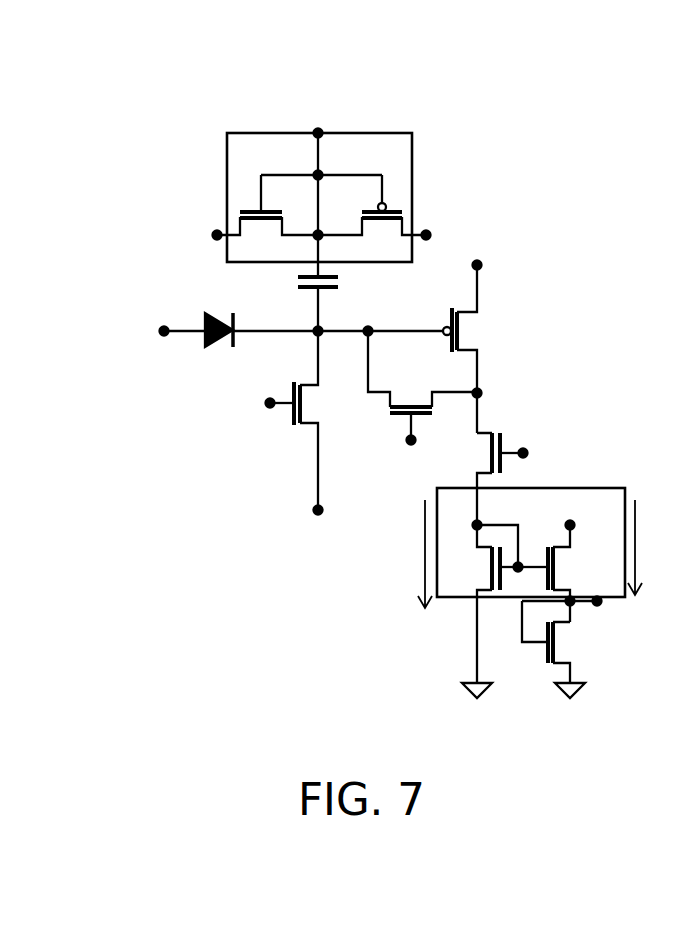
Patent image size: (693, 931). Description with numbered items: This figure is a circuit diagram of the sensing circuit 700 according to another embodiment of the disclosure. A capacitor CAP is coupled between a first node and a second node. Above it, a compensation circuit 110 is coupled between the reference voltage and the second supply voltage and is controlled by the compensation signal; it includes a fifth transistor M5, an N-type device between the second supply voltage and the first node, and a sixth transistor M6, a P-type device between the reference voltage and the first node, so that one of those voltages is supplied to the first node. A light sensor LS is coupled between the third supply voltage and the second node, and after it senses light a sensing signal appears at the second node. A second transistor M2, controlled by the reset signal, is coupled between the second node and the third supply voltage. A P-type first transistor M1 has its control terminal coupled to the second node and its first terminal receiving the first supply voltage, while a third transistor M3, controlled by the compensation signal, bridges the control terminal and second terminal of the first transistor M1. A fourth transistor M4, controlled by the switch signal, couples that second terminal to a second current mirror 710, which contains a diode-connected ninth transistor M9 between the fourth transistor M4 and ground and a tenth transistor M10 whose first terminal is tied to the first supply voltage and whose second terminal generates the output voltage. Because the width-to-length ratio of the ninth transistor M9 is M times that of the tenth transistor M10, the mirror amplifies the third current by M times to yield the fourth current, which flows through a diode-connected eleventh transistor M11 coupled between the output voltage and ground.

The sensing circuit 700 is at (388, 416).
The compensation circuit 110 is at (337, 216).
The second current mirror 710 is at (531, 585).
The first transistor M1 is at (470, 330).
The second transistor M2 is at (312, 403).
The third transistor M3 is at (412, 398).
The fourth transistor M4 is at (482, 455).
The fifth transistor M5 is at (259, 230).
The sixth transistor M6 is at (383, 228).
The ninth transistor M9 is at (490, 570).
The tenth transistor M10 is at (563, 570).
The eleventh transistor M11 is at (563, 643).
The capacitor CAP is at (340, 283).
The light sensor LS is at (225, 313).